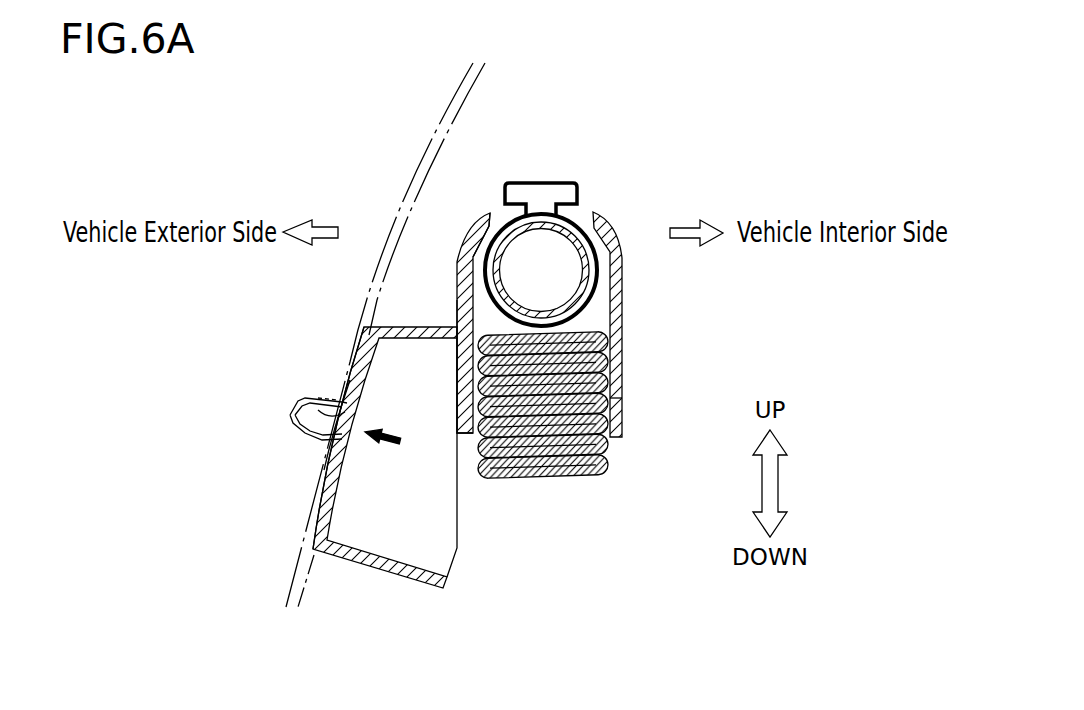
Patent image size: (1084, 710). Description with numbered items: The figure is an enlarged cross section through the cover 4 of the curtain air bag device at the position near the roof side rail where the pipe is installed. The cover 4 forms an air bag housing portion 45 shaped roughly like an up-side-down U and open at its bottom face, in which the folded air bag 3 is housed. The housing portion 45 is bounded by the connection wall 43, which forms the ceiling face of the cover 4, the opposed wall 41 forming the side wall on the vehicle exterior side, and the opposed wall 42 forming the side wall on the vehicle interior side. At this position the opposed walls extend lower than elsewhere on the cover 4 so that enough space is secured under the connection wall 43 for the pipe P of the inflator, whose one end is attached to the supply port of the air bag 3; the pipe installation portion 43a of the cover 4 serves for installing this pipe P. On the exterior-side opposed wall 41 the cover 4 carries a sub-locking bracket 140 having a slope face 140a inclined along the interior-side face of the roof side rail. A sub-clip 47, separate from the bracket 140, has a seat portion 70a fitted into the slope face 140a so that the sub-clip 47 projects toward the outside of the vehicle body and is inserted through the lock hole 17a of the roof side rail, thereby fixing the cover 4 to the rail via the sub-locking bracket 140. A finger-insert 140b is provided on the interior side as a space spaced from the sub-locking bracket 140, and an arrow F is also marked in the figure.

The cover 4 is at (551, 281).
The connection wall 43 is at (483, 213).
The pipe installation portion 43a is at (467, 230).
The opposed wall 41 is at (456, 307).
The opposed wall 42 is at (622, 327).
The air bag housing portion 45 is at (612, 398).
The pipe P is at (590, 298).
The air bag 3 is at (588, 480).
The sub-locking bracket 140 is at (375, 482).
The slope face 140a is at (302, 535).
The finger-insert 140b is at (407, 462).
The seat portion 70a is at (327, 468).
The sub-clip 47 is at (290, 415).
The lock hole 17a is at (318, 398).
The force F is at (383, 424).